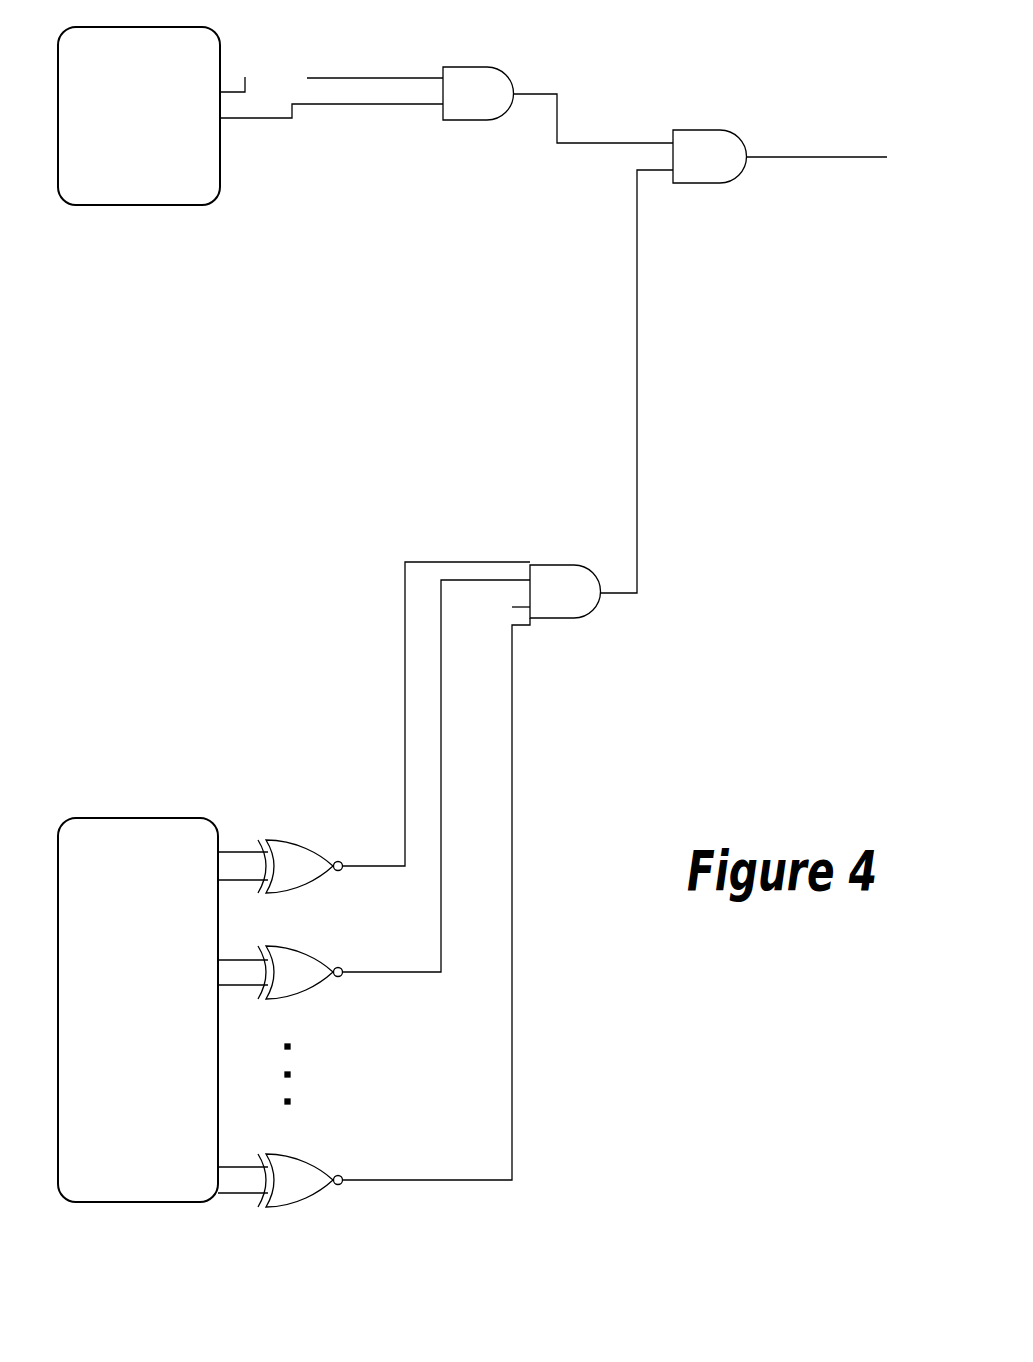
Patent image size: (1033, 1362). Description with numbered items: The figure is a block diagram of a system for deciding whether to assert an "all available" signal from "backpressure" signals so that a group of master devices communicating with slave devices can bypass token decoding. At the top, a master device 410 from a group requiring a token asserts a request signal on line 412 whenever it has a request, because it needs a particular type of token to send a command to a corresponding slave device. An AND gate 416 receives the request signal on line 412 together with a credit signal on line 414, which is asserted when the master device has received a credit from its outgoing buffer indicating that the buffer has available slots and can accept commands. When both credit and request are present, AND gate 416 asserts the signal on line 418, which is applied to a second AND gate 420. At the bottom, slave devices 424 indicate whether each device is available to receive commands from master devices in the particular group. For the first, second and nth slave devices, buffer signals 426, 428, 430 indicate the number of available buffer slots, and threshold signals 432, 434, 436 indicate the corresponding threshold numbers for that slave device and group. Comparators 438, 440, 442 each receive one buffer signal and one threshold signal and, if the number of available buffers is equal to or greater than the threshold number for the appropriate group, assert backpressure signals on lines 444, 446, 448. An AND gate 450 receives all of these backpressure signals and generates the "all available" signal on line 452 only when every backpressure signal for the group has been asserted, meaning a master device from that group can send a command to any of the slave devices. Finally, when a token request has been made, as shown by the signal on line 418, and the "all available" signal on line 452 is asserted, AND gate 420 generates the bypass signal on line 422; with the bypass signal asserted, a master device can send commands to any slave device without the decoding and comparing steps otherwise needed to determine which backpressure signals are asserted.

The master device 410 is at (124, 170).
The request signal line 412 is at (316, 76).
The credit signal line 414 is at (315, 107).
The AND gate 416 is at (480, 67).
The request-and-credit signal line 418 is at (568, 142).
The AND gate 420 is at (708, 183).
The bypass signal line 422 is at (762, 157).
The slave devices 424 is at (123, 1064).
The buffer signal 426 is at (232, 852).
The buffer signal 428 is at (232, 960).
The buffer signal 430 is at (230, 1167).
The threshold signal 432 is at (230, 880).
The threshold signal 434 is at (232, 985).
The threshold signal 436 is at (230, 1193).
The comparator 438 is at (285, 893).
The comparator 440 is at (285, 999).
The comparator 442 is at (283, 1207).
The backpressure signal line 444 is at (405, 688).
The backpressure signal line 446 is at (441, 785).
The backpressure signal line 448 is at (512, 980).
The AND gate 450 is at (552, 620).
The all available signal line 452 is at (638, 380).